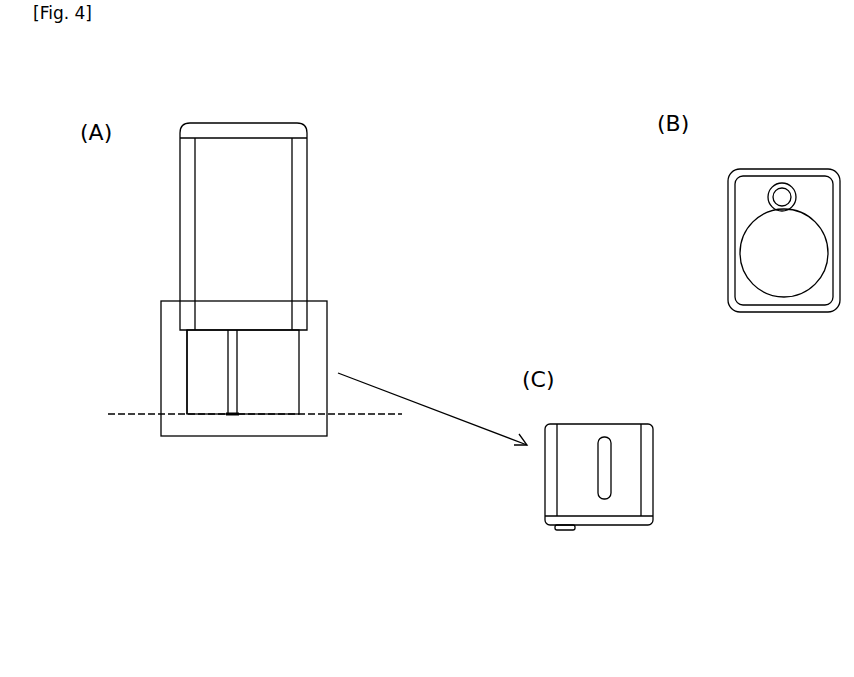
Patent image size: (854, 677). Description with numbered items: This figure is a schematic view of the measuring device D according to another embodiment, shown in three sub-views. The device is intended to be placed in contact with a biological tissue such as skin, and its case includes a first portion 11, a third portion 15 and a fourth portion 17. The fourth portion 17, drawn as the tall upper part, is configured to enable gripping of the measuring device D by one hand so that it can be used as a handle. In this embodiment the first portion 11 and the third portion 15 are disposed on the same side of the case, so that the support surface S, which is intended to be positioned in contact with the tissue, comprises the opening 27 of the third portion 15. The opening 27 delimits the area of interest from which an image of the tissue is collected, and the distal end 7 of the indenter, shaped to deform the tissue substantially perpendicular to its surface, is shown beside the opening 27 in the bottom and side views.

The fourth portion 17 is at (253, 133).
The third portion 15 is at (300, 350).
The first portion 11 is at (187, 369).
The support surface S is at (123, 416).
The measuring device D is at (323, 223).
The distal end 7 is at (777, 190).
The opening 27 is at (770, 258).